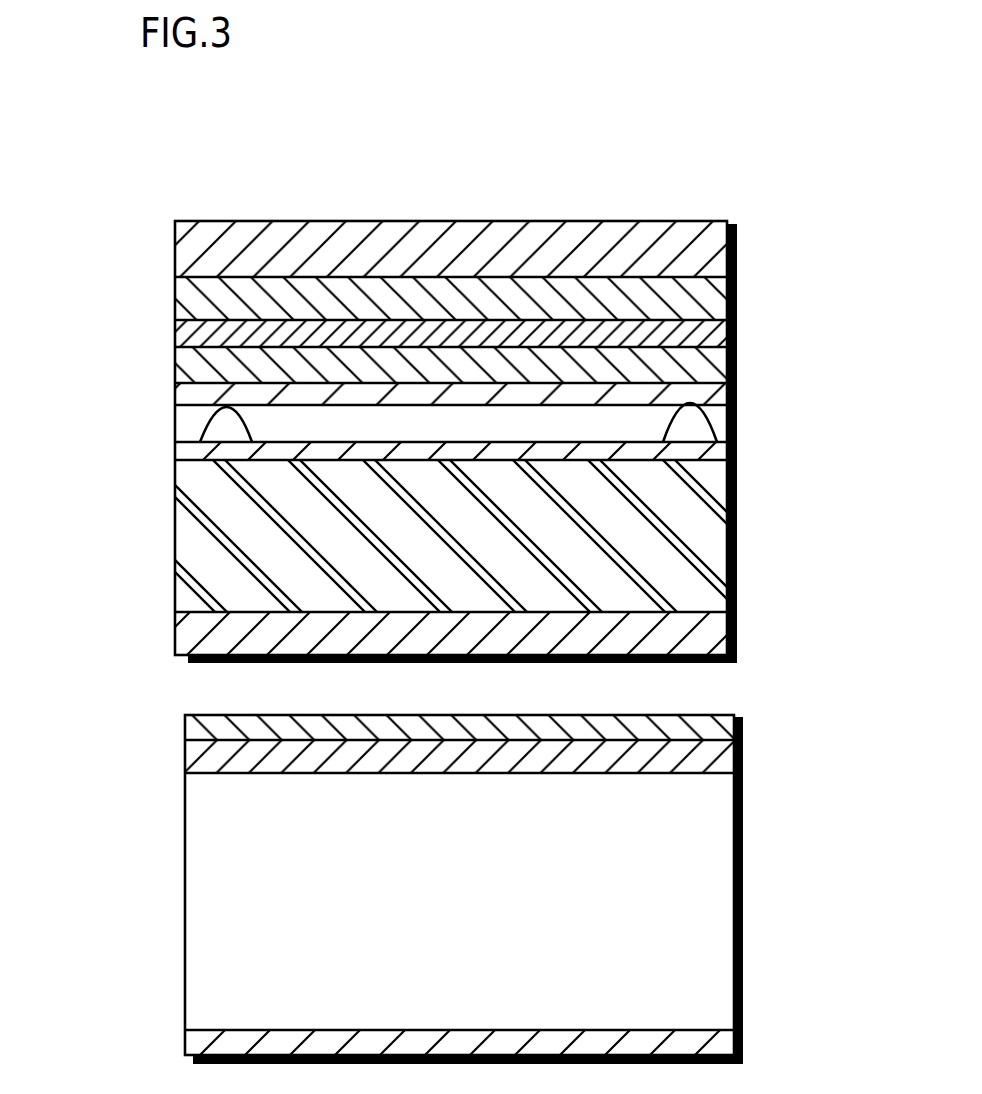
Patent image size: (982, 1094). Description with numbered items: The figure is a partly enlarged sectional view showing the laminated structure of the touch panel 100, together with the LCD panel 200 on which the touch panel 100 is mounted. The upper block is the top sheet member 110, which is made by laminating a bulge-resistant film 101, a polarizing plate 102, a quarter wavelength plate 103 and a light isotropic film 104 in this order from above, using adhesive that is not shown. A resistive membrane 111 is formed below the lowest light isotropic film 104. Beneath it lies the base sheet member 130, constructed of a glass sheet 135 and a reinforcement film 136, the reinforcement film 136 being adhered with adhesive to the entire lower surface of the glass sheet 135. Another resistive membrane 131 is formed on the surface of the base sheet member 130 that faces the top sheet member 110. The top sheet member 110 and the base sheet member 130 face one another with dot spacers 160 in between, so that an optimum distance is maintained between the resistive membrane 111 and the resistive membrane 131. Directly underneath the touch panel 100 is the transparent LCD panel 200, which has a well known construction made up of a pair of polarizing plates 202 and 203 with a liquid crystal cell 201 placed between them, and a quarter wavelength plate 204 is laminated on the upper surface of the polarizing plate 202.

The touch panel 100 is at (112, 345).
The top sheet member 110 is at (803, 210).
The bulge-resistant film 101 is at (738, 234).
The polarizing plate 102 is at (738, 278).
The quarter wavelength plate 103 is at (738, 311).
The light isotropic film 104 is at (738, 343).
The resistive membrane 111 is at (738, 374).
The dot spacers 160 is at (738, 404).
The resistive membrane 131 is at (738, 436).
The base sheet member 130 is at (808, 482).
The glass sheet 135 is at (738, 506).
The reinforcement film 136 is at (738, 611).
The LCD panel 200 is at (120, 872).
The quarter wavelength plate 204 is at (744, 719).
The polarizing plate 202 is at (744, 750).
The liquid crystal cell 201 is at (744, 872).
The polarizing plate 203 is at (744, 1038).